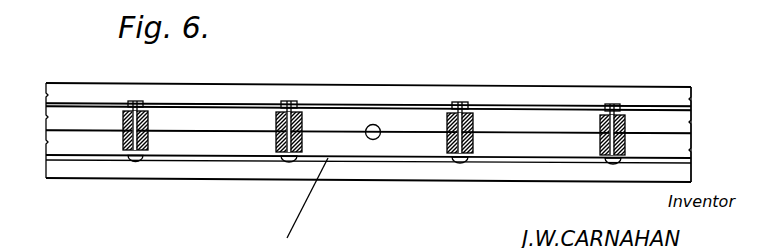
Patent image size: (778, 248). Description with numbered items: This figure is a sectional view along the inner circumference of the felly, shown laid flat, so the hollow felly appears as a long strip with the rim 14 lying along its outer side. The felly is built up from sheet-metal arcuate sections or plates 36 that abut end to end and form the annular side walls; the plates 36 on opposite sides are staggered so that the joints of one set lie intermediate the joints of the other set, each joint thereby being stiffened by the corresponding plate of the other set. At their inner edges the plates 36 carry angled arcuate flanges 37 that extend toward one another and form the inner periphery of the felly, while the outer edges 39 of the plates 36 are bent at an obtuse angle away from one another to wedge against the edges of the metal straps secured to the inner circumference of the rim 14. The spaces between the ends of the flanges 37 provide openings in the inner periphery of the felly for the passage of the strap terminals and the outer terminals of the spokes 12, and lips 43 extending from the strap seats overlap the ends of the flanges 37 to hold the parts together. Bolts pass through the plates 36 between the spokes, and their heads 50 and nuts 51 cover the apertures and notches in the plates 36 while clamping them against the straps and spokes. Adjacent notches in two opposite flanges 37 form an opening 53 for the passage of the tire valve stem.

The spokes 12 is at (627, 118).
The rim 14 is at (519, 91).
The arcuate sections or plates 36 is at (330, 107).
The arcuate flanges 37 is at (210, 138).
The outer edges of the plates 39 is at (416, 107).
The lips 43 is at (282, 146).
The heads 50 is at (463, 163).
The nuts 51 is at (613, 104).
The opening 53 is at (373, 140).